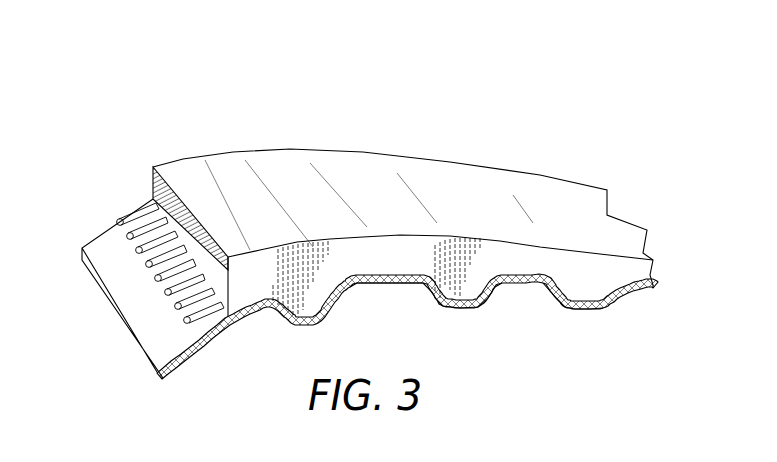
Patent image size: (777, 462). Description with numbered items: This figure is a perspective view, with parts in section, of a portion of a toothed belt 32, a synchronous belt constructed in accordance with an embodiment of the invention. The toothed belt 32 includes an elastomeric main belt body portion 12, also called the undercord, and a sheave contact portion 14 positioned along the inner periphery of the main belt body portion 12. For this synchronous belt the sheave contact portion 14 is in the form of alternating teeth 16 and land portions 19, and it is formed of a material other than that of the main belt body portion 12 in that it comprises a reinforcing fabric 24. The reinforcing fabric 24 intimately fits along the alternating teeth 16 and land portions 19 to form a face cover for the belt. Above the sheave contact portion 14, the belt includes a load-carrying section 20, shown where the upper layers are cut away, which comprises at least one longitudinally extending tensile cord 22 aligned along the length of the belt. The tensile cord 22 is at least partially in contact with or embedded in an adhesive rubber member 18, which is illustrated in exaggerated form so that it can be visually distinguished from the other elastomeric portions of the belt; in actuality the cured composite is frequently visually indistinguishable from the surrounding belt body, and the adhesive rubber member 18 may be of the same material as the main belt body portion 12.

The toothed belt 32 is at (293, 120).
The adhesive rubber member 18 is at (183, 158).
The load-carrying section 20 is at (133, 192).
The tensile cord 22 is at (146, 266).
The main belt body portion 12 is at (310, 304).
The land portions 19 is at (381, 283).
The reinforcing fabric 24 is at (457, 309).
The sheave contact portion 14 is at (543, 290).
The teeth 16 is at (603, 308).